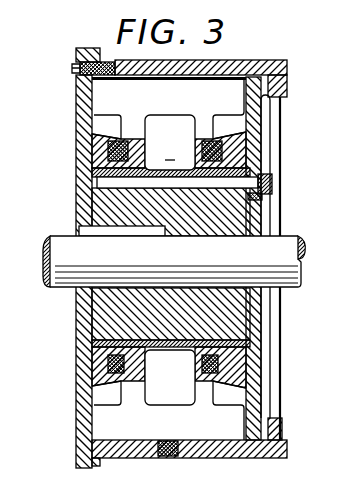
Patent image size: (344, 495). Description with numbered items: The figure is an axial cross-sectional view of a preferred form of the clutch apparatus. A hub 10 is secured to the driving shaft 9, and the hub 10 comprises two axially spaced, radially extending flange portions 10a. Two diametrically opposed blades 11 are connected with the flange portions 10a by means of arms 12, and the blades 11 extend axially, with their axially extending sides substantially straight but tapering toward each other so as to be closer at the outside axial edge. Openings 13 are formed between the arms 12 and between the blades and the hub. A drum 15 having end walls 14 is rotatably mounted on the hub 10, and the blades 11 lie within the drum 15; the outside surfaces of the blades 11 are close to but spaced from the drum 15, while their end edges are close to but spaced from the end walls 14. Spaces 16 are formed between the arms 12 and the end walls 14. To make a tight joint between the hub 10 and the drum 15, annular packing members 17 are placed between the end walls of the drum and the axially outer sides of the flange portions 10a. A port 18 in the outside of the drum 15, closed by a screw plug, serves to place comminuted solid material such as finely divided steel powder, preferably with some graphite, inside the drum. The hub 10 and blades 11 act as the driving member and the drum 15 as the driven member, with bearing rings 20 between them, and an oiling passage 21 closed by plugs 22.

The driving shaft 9 is at (50, 283).
The hub 10 is at (94, 209).
The flange portions 10a is at (138, 152).
The blades 11 is at (268, 108).
The arms 12 is at (138, 136).
The openings 13 is at (183, 165).
The end walls 14 is at (77, 103).
The drum 15 is at (115, 450).
The spaces 16 is at (215, 118).
The packing members 17 is at (94, 151).
The port 18 is at (172, 452).
The bearing rings 20 is at (94, 172).
The oiling passage 21 is at (262, 198).
The plugs 22 is at (96, 188).